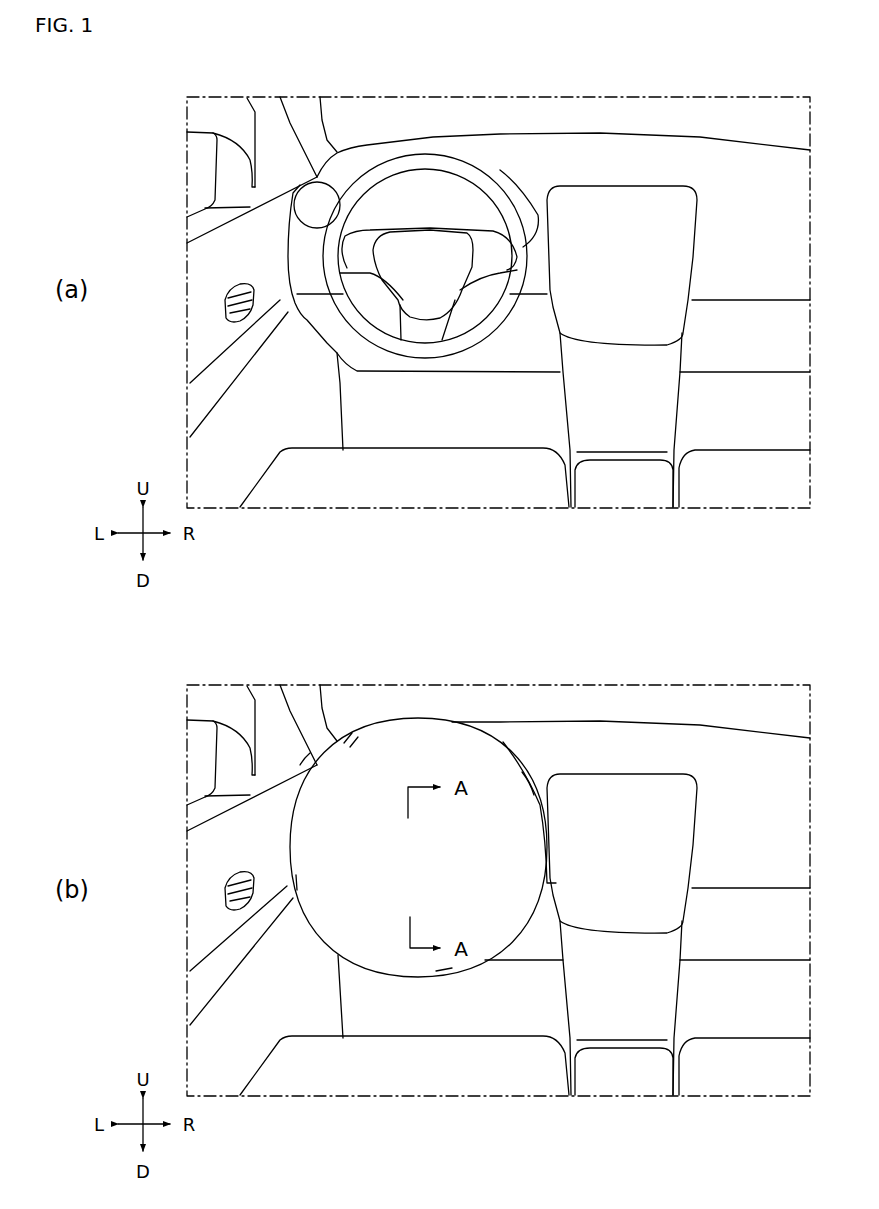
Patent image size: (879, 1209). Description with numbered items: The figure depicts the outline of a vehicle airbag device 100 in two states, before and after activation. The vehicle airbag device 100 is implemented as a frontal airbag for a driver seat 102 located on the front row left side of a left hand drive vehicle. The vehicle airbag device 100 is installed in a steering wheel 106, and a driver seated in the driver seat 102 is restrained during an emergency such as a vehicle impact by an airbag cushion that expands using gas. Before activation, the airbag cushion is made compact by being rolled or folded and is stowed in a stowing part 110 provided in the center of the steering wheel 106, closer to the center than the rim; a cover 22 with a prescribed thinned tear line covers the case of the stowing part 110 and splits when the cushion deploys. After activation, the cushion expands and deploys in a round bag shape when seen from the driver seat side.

The vehicle airbag device 100 is at (384, 140).
The driver seat 102 is at (413, 486).
The steering wheel 106 is at (463, 206).
The rim 22 is at (500, 183).
The stowing part 110 is at (500, 253).